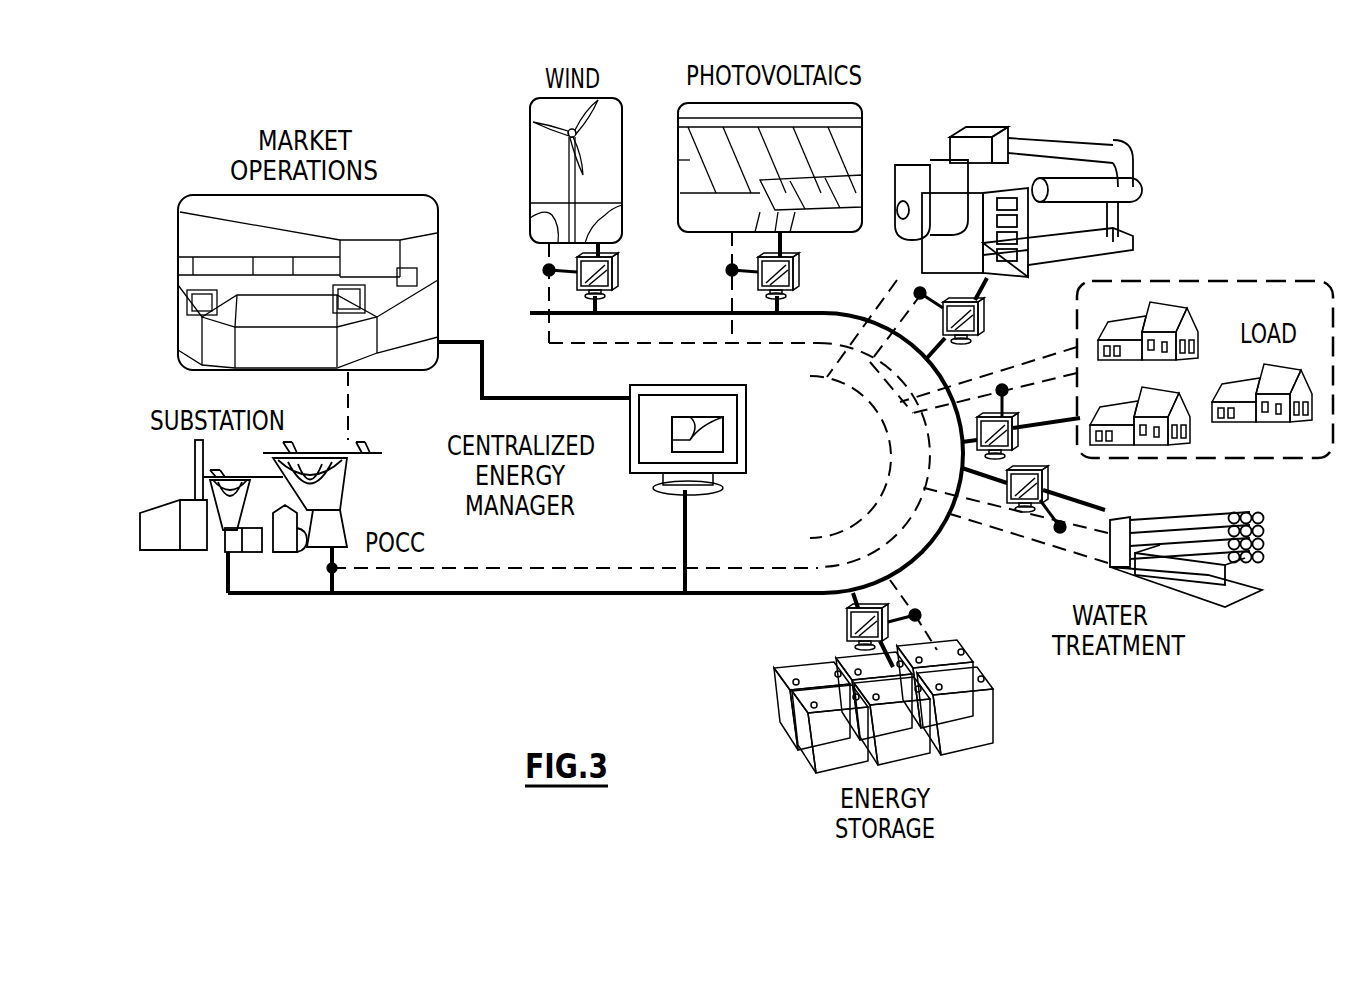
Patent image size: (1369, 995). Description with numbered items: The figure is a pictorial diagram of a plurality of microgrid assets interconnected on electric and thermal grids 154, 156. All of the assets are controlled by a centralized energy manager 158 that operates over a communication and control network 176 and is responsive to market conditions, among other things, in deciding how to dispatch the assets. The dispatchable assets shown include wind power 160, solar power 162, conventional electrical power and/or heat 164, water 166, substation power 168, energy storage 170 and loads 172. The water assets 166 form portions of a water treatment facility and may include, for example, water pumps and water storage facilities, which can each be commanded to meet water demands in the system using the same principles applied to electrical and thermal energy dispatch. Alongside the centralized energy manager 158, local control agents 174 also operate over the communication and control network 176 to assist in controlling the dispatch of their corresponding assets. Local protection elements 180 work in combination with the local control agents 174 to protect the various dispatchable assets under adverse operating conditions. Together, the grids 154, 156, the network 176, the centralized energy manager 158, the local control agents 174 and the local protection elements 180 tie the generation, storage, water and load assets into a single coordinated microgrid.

The electric grid 154 is at (427, 572).
The thermal grid 156 is at (872, 522).
The centralized energy manager 158 is at (748, 441).
The wind power 160 is at (531, 142).
The solar power 162 is at (862, 125).
The conventional electrical power and/or heat 164 is at (1140, 160).
The water treatment facility 166 is at (1262, 526).
The substation power 168 is at (140, 528).
The energy storage 170 is at (818, 750).
The loads 172 is at (1250, 282).
The local control agents 174 is at (846, 620).
The communication and control network 176 is at (644, 597).
The local protection elements 180 is at (917, 618).